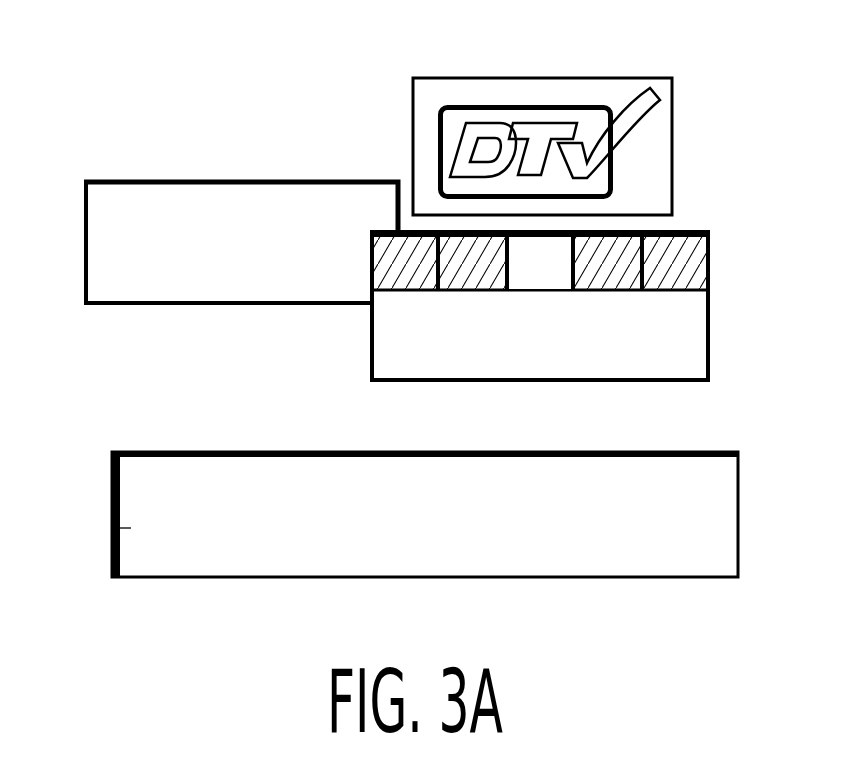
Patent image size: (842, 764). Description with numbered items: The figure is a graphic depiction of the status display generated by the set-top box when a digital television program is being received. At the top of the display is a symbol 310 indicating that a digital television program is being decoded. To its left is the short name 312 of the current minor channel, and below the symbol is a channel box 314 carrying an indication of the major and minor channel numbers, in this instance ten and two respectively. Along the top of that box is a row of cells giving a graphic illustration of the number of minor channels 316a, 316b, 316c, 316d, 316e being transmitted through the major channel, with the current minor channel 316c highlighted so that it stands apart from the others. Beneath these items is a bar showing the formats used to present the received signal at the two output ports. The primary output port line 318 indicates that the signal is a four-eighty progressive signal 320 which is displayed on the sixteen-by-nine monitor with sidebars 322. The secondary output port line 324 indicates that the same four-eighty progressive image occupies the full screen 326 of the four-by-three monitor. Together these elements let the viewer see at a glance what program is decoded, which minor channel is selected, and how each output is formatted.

The symbol 310 is at (523, 78).
The short name 312 is at (217, 178).
The channel number display box 314 is at (708, 333).
The minor channel 316a is at (390, 265).
The minor channel 316b is at (482, 292).
The current minor channel 316c is at (550, 292).
The minor channel 316d is at (624, 243).
The minor channel 316e is at (700, 256).
The primary output port format indication 318 is at (112, 481).
The DTV scan format indication (525-P) 320 is at (305, 483).
The sidebars 322 is at (603, 510).
The secondary output port format indication 324 is at (112, 532).
The TV display mode indication (FULL) 326 is at (452, 557).